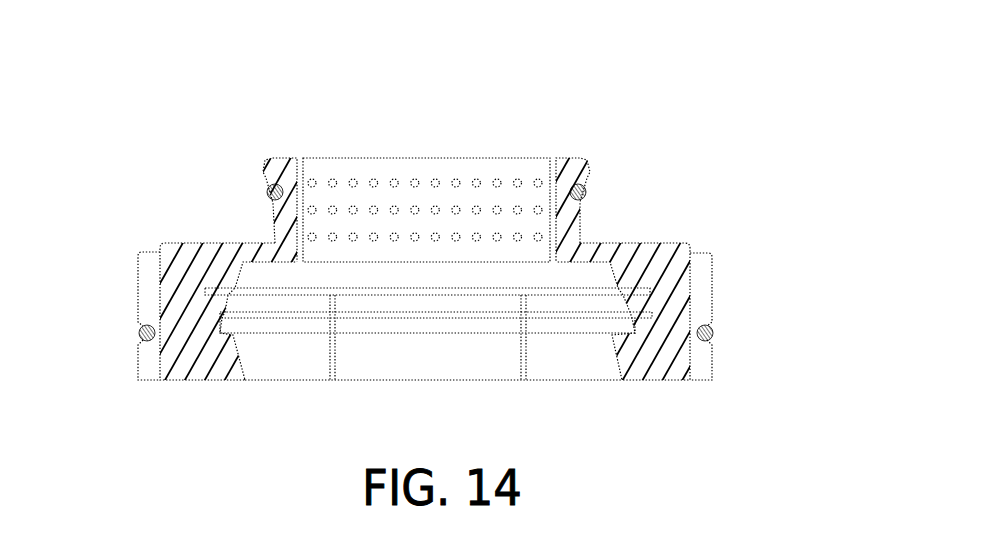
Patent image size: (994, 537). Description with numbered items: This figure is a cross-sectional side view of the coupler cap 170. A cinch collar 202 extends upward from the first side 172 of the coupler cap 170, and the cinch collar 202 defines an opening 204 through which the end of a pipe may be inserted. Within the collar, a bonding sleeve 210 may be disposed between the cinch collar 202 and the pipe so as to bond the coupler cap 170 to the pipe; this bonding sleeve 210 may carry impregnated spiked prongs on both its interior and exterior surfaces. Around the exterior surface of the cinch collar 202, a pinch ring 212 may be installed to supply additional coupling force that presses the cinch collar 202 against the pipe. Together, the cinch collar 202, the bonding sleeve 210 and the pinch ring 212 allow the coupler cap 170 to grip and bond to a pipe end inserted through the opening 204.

The coupler cap 170 is at (480, 222).
The first side 172 is at (195, 240).
The cinch collar 202 is at (568, 158).
The opening 204 is at (297, 158).
The bonding sleeve 210 is at (416, 180).
The pinch ring 212 is at (585, 188).